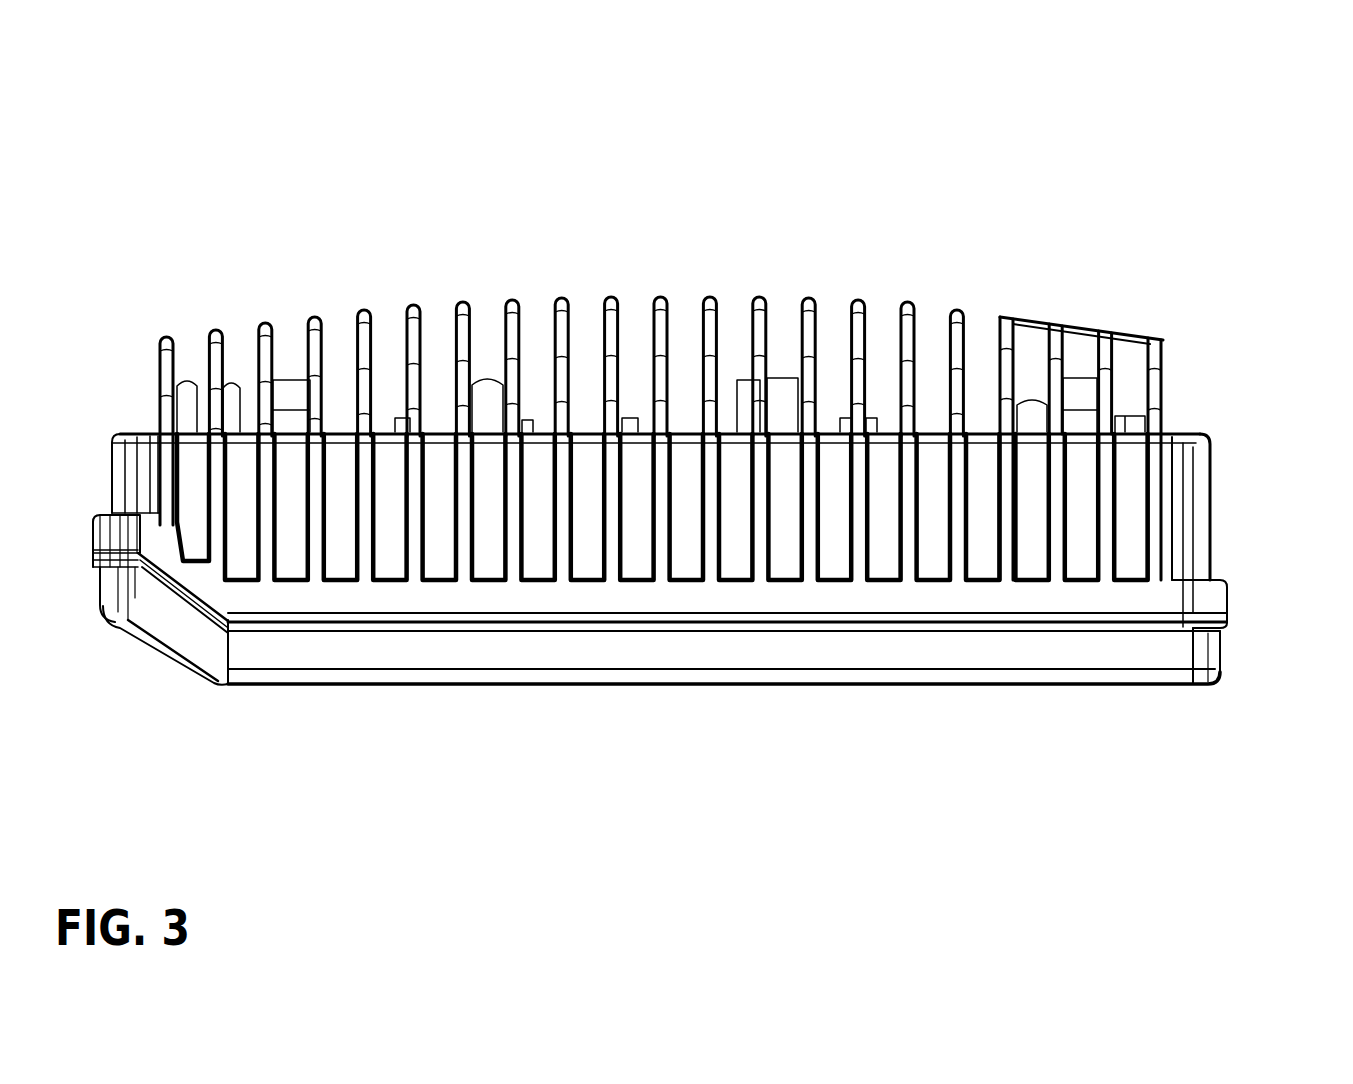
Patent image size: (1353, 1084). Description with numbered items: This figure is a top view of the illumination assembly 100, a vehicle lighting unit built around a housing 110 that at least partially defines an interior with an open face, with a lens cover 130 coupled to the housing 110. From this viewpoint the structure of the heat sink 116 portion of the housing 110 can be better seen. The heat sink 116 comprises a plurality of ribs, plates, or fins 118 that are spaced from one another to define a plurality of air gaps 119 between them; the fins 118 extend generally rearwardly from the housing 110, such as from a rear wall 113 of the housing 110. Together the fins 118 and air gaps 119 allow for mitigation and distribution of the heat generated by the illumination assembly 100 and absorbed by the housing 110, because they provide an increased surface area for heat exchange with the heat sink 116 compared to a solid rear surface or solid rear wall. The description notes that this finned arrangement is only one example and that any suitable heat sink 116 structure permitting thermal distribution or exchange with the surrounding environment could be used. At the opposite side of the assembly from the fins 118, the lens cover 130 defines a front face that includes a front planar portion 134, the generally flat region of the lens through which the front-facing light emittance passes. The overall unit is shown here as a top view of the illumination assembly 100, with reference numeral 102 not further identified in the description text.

The illumination assembly 100 is at (1192, 203).
The heat sink 102 is at (958, 170).
The housing 110 is at (1215, 535).
The rear wall 113 is at (143, 430).
The heat sink 116 is at (1175, 352).
The fins 118 is at (499, 297).
The air gaps 119 is at (788, 324).
The lens cover 130 is at (1223, 630).
The front planar portion 134 is at (869, 692).